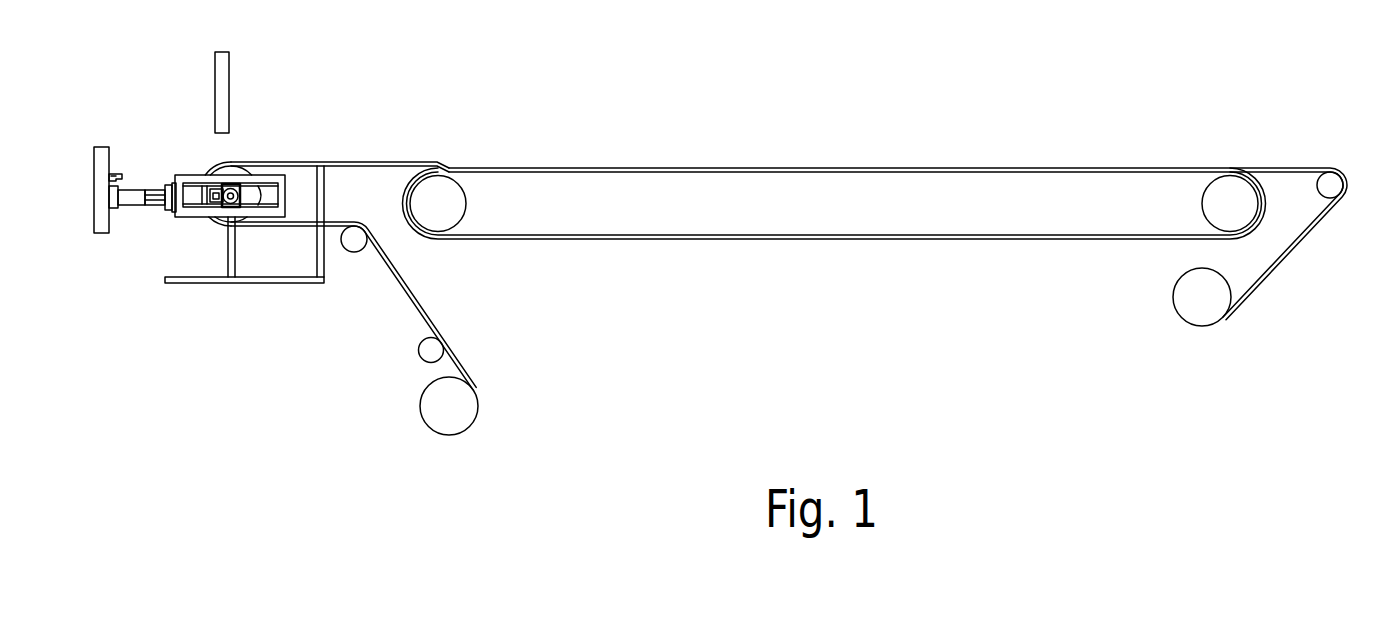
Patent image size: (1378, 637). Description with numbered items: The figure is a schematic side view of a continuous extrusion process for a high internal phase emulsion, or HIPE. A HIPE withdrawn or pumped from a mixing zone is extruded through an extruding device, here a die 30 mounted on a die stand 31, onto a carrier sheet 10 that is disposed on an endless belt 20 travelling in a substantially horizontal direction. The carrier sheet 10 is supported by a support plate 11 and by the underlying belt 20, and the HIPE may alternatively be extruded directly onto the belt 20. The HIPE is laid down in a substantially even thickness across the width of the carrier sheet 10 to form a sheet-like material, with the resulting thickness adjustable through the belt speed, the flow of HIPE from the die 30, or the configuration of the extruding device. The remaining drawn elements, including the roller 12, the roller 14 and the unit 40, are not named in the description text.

The carrier sheet 10 is at (265, 160).
The support plate 11 is at (357, 167).
The roller 12 is at (433, 420).
The roller 14 is at (1188, 305).
The endless belt 20 is at (427, 166).
The die 30 is at (223, 110).
The die stand 31 is at (102, 225).
The drive unit 40 is at (205, 218).